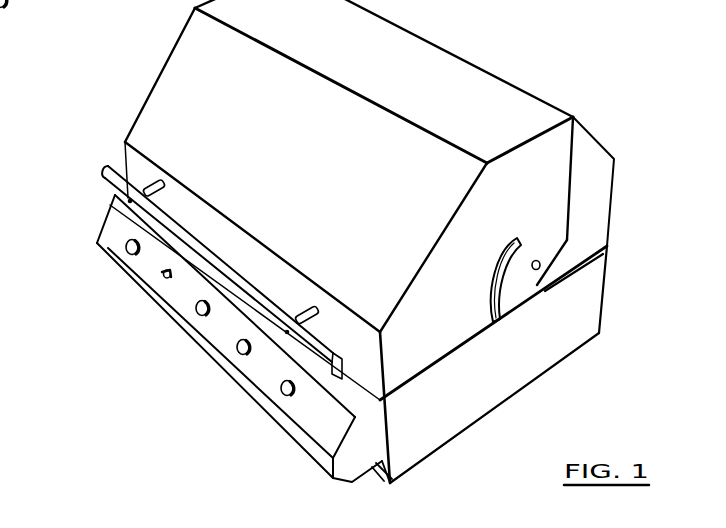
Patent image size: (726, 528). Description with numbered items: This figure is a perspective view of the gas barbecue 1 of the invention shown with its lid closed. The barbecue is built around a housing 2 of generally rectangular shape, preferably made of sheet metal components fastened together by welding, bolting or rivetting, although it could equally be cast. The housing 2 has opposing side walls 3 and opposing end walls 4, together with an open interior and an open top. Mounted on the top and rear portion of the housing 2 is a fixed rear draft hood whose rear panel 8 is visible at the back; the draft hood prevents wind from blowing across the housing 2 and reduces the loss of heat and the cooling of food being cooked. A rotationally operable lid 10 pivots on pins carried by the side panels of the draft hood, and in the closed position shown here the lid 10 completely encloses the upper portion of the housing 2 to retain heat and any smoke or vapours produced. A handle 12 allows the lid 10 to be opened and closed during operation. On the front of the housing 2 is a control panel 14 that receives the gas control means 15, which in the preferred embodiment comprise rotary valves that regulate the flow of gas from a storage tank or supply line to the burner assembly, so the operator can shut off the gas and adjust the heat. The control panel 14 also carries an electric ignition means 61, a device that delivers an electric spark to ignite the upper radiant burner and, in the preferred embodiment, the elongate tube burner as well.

The gas barbecue 1 is at (437, 152).
The lid 10 is at (155, 108).
The handle 12 is at (103, 177).
The control panel 14 is at (112, 221).
The gas control means 15 is at (240, 342).
The electric ignition means 61 is at (160, 277).
The rear panel 8 is at (612, 192).
The housing 2 is at (574, 333).
The end walls 4 is at (521, 372).
The side walls 3 is at (392, 482).